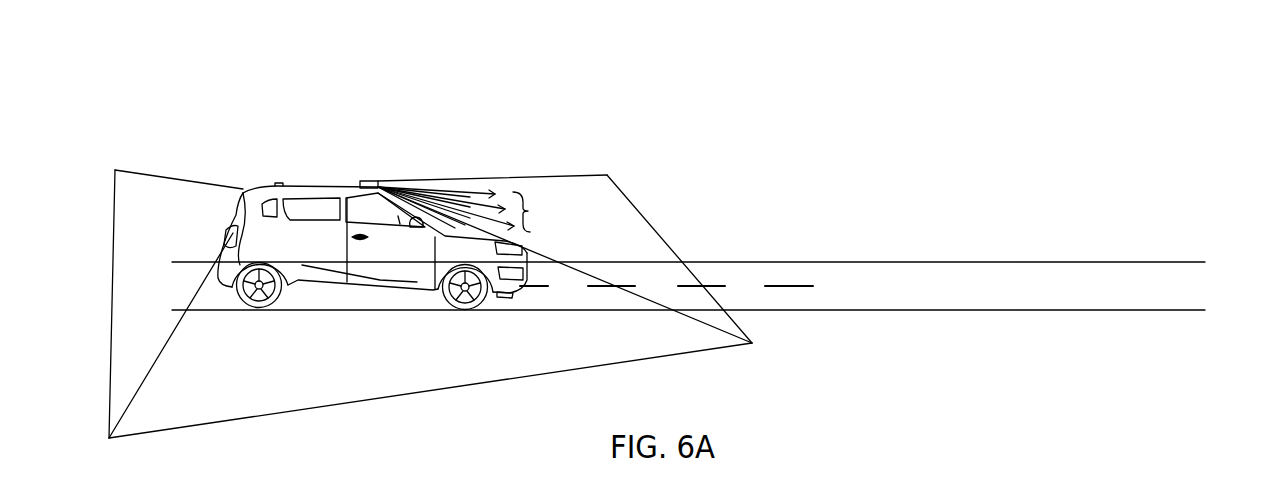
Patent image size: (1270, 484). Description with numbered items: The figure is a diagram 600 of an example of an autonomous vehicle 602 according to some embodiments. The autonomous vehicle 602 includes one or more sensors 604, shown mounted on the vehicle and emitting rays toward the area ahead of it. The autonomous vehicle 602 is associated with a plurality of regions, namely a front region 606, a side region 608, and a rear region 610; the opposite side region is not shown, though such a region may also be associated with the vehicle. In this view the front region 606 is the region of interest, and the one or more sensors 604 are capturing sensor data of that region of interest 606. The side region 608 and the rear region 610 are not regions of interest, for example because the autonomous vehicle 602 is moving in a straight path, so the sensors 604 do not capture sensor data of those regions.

The diagram 600 is at (1112, 93).
The autonomous vehicle 602 is at (312, 128).
The sensors 604 is at (372, 180).
The front region 606 is at (663, 238).
The side region 608 is at (410, 396).
The rear region 610 is at (113, 288).